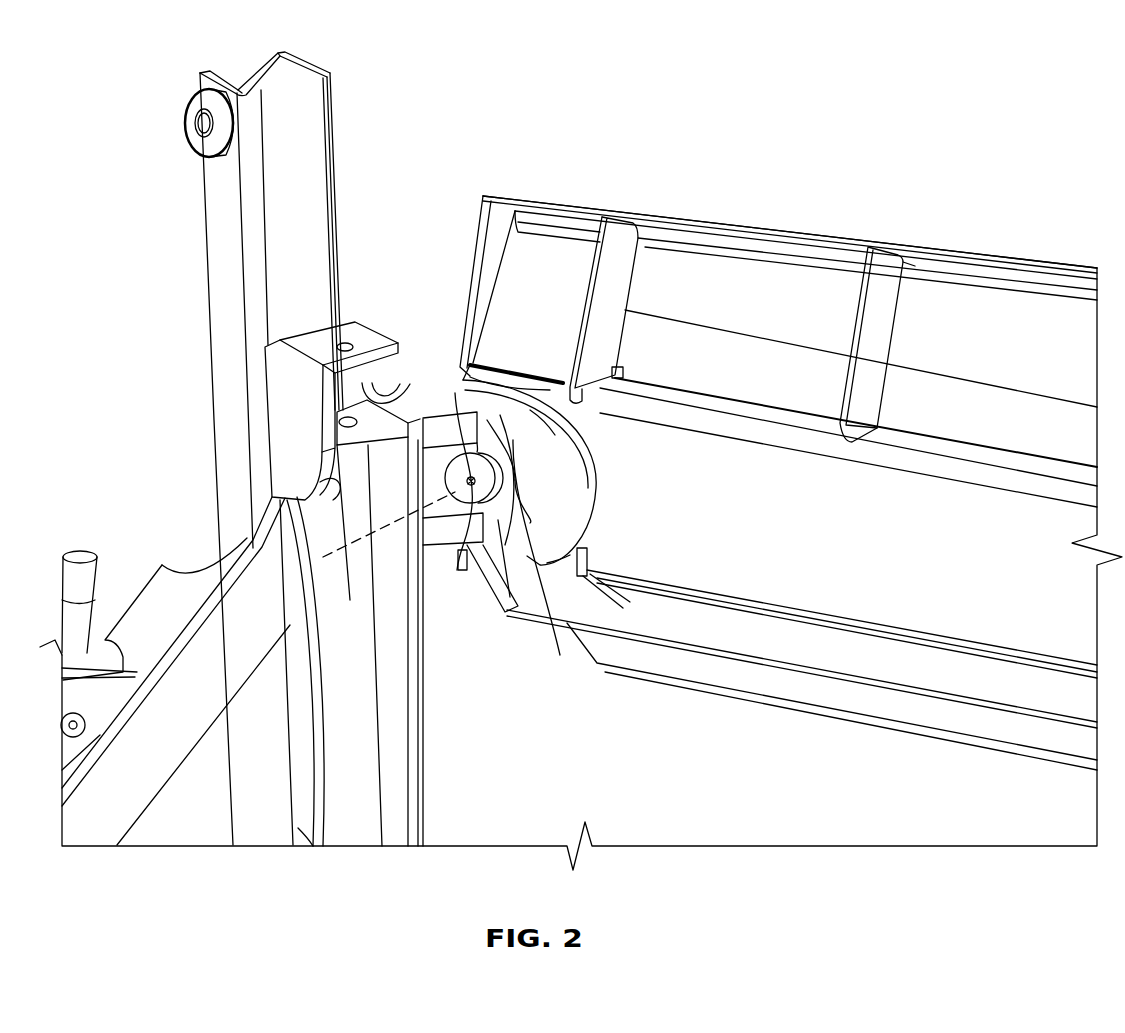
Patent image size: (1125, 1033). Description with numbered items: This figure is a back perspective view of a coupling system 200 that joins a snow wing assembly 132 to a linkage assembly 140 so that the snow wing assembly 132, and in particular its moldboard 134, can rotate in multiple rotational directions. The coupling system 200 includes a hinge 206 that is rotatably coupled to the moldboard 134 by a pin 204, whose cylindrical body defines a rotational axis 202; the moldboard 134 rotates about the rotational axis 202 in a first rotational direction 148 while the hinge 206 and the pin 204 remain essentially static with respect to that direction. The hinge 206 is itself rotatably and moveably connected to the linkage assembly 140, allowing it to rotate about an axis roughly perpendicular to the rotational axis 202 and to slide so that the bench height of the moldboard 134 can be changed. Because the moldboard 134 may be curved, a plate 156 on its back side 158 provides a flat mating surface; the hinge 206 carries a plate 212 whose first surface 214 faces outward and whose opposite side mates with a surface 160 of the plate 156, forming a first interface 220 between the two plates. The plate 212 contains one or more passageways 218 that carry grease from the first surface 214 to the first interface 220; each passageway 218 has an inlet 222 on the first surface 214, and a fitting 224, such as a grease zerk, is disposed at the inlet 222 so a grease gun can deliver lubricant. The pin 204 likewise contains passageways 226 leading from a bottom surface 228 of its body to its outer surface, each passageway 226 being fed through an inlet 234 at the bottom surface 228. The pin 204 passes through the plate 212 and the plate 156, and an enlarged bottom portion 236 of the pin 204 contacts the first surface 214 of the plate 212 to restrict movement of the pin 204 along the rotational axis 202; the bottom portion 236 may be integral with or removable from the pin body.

The snow wing assembly 132 is at (788, 133).
The moldboard 134 is at (536, 197).
The linkage assembly 140 is at (150, 468).
The first rotational direction 148 is at (512, 787).
The plate 156 is at (573, 477).
The back side 158 is at (545, 315).
The surface 160 is at (562, 537).
The coupling system 200 is at (395, 303).
The rotational axis 202 is at (357, 543).
The pin 204 is at (480, 558).
The hinge 206 is at (427, 417).
The plate 212 is at (528, 503).
The first surface 214 is at (498, 522).
The passageways 218 is at (515, 483).
The first interface 220 is at (537, 428).
The inlet 222 is at (519, 402).
The fitting 224 is at (545, 565).
The passageways 226 is at (467, 481).
The bottom surface 228 is at (457, 570).
The inlet 234 is at (455, 393).
The bottom portion 236 is at (477, 452).